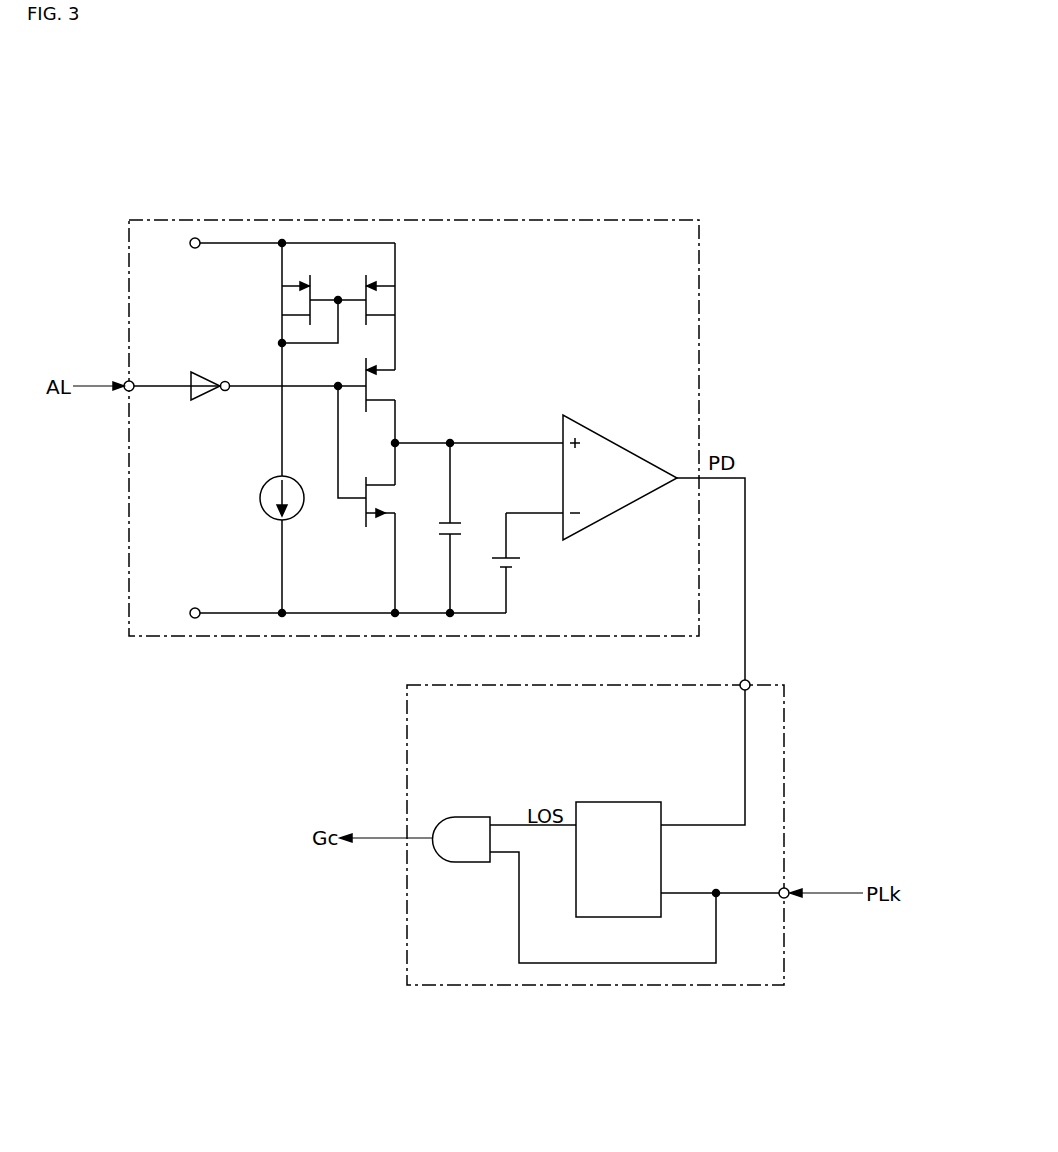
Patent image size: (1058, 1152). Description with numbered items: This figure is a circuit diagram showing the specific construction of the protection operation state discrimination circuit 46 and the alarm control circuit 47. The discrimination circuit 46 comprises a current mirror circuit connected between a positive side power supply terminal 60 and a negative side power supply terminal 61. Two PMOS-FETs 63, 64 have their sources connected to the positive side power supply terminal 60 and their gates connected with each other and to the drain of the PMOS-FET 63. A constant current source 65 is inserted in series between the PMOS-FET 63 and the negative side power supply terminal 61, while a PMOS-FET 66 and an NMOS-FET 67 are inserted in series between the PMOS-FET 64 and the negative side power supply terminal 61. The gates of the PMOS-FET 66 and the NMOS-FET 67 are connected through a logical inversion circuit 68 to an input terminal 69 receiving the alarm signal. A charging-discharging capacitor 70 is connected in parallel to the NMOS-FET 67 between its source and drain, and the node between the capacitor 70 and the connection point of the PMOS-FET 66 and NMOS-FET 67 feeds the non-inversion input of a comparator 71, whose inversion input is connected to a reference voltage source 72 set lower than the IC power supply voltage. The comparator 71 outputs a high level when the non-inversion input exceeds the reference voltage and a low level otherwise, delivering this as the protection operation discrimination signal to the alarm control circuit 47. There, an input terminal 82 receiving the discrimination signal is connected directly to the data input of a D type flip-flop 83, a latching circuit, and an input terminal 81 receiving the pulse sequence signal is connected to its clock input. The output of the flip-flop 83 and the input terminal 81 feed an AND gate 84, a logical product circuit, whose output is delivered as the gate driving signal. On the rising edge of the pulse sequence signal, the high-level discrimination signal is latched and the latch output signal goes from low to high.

The protection operation state discrimination circuit 46 is at (480, 220).
The alarm control circuit 47 is at (784, 755).
The positive side power supply terminal 60 is at (199, 238).
The negative side power supply terminal 61 is at (195, 618).
The PMOS-FET 63 is at (321, 273).
The PMOS-FET 64 is at (357, 273).
The constant current source 65 is at (259, 498).
The PMOS-FET 66 is at (364, 413).
The NMOS-FET 67 is at (363, 520).
The logical inversion circuit 68 is at (208, 372).
The input terminal 69 is at (125, 380).
The charging-discharging capacitor 70 is at (455, 520).
The comparator 71 is at (613, 445).
The reference voltage source 72 is at (506, 568).
The input terminal 81 is at (789, 889).
The input terminal 82 is at (750, 680).
The D type flip-flop 83 is at (618, 800).
The AND gate 84 is at (470, 817).